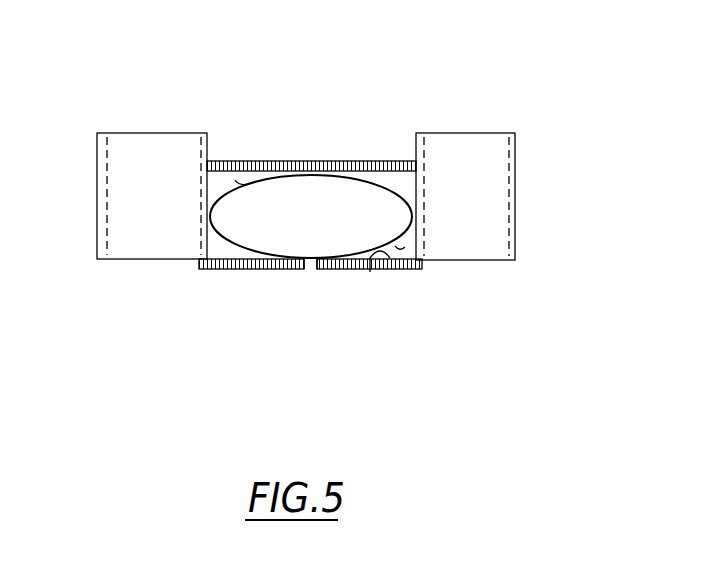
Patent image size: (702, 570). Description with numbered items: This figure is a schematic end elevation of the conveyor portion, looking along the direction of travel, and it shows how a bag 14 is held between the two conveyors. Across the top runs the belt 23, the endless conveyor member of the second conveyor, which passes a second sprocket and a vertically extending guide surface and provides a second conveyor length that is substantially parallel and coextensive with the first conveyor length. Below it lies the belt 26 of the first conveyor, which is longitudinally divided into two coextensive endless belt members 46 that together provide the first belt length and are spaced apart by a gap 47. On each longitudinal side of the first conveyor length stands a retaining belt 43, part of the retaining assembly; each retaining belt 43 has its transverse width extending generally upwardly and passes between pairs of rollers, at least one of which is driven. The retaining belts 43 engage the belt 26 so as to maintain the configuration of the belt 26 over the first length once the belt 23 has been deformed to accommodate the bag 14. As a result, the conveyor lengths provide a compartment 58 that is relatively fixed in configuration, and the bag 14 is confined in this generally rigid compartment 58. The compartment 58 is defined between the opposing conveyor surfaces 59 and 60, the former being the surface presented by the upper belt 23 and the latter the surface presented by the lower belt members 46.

The bag 14 is at (383, 186).
The belt 23 is at (279, 161).
The belt 26 is at (193, 298).
The retaining belt 43 is at (152, 148).
The endless belt member 46 is at (260, 270).
The gap 47 is at (312, 272).
The compartment 58 is at (400, 248).
The conveyor surface 59 is at (235, 180).
The conveyor surface 60 is at (370, 272).